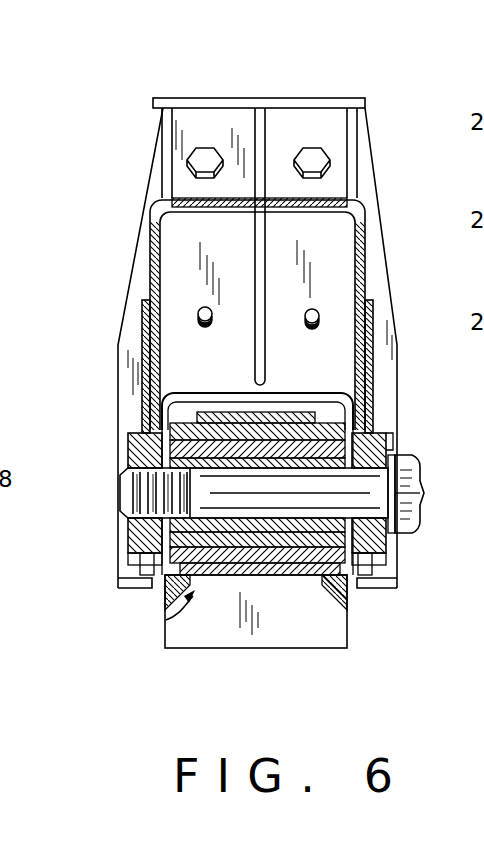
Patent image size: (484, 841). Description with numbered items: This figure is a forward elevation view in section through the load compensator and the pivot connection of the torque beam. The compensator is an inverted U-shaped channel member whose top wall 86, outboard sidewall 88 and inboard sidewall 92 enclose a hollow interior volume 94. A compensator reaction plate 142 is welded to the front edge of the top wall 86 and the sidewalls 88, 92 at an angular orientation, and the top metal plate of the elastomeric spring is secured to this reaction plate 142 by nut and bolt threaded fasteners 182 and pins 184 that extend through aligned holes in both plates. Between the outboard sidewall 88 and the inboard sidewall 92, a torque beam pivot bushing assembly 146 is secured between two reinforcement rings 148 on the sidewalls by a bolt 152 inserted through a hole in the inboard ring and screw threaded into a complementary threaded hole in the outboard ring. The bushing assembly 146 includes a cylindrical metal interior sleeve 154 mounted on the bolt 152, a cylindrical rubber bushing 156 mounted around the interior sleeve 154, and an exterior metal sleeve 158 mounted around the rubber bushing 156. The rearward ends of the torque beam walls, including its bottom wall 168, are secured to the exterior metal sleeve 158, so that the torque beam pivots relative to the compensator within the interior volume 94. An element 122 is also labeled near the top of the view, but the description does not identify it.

The mounting plate 122 is at (312, 98).
The nut and bolt threaded fasteners 182 is at (200, 160).
The top wall 86 is at (188, 205).
The outboard sidewall 88 is at (150, 362).
The hollow interior volume 94 is at (226, 372).
The pins 184 is at (198, 306).
The compensator reaction plate 142 is at (128, 330).
The inboard sidewall 92 is at (375, 348).
The reinforcement rings 148 is at (130, 540).
The bolt 152 is at (424, 495).
The exterior metal sleeve 158 is at (260, 575).
The cylindrical rubber bushing 156 is at (287, 550).
The cylindrical metal interior sleeve 154 is at (340, 605).
The bottom wall 168 is at (202, 622).
The torque beam pivot bushing assembly 146 is at (166, 620).